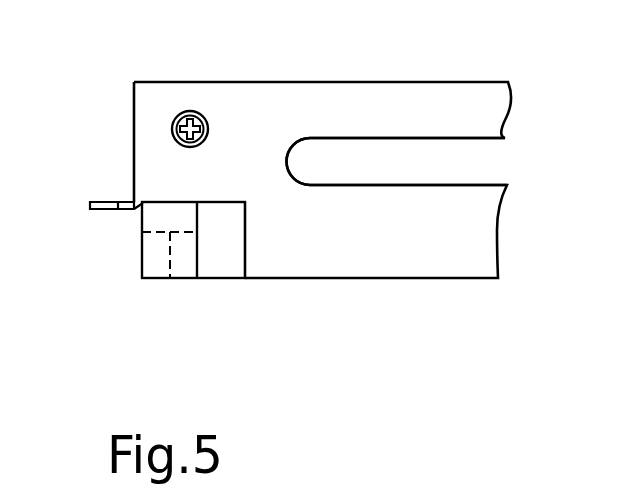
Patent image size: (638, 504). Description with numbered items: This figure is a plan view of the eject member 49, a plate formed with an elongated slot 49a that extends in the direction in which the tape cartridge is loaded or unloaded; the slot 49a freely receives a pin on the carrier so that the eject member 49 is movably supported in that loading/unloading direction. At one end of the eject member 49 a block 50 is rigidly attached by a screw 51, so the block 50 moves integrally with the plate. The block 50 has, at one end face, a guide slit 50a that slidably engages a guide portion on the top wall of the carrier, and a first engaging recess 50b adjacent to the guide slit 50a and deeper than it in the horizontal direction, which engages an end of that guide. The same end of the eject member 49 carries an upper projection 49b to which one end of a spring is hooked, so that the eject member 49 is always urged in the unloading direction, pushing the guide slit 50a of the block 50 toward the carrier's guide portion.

The eject member 49 is at (403, 93).
The elongated slot 49a is at (505, 139).
The upper projection 49b is at (103, 215).
The block 50 is at (158, 202).
The guide slit 50a is at (170, 278).
The first engaging recess 50b is at (233, 265).
The screw 51 is at (188, 111).